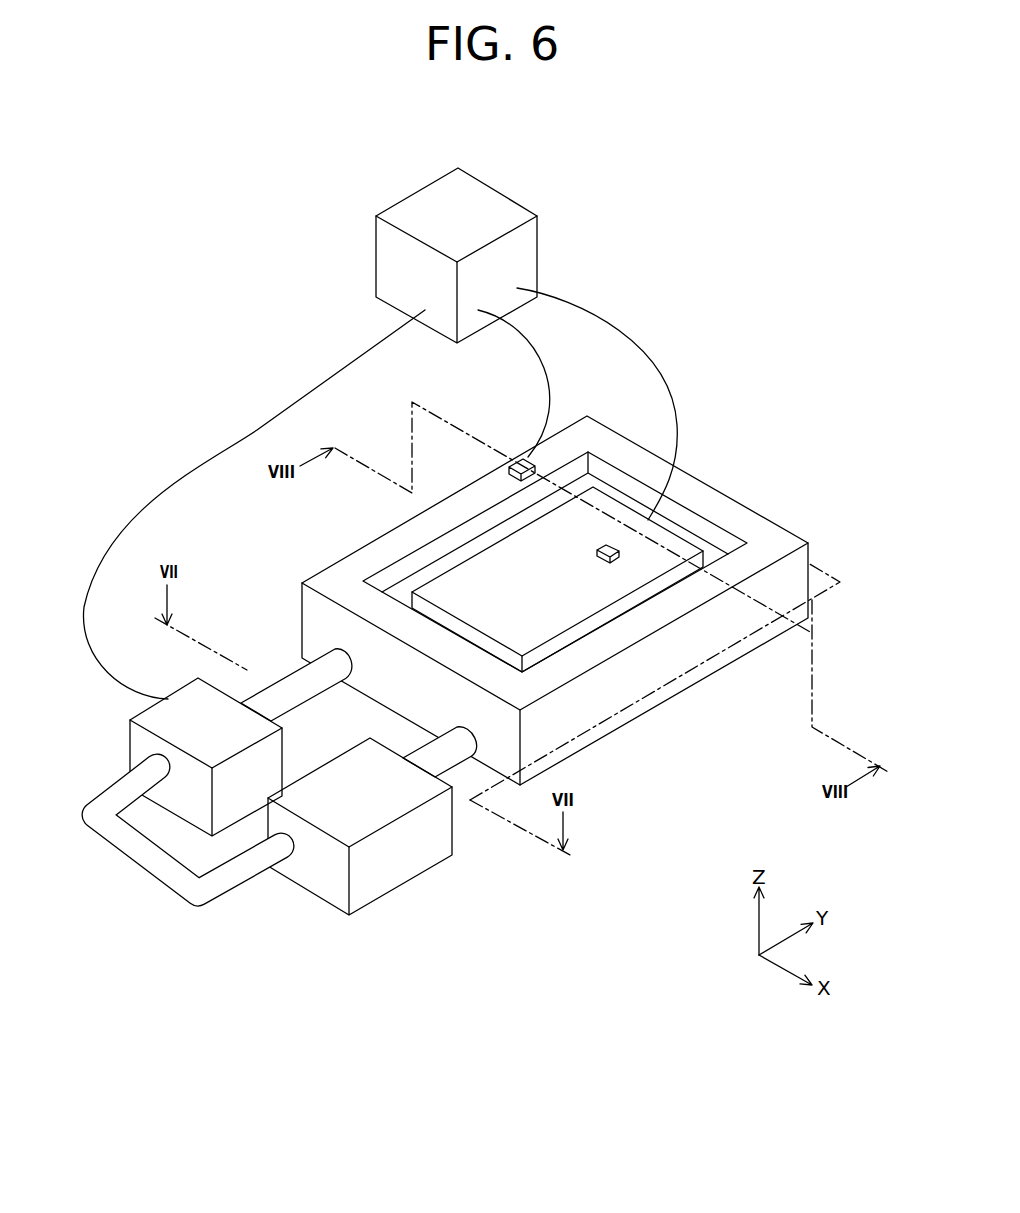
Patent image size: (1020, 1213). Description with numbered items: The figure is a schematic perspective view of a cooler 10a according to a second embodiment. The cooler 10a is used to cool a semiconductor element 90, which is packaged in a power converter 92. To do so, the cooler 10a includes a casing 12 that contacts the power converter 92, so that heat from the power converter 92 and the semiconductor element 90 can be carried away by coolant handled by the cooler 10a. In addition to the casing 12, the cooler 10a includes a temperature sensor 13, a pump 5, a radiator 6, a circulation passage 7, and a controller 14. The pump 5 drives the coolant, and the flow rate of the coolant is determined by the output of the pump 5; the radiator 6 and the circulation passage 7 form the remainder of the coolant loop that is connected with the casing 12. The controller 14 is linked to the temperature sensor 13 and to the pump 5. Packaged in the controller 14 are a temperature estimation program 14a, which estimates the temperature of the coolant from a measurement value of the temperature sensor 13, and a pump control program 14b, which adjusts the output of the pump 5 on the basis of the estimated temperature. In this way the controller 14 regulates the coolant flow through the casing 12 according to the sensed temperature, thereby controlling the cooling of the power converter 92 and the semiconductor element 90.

The controller 14 is at (498, 243).
The temperature estimation program 14a is at (456, 255).
The pump control program 14b is at (487, 203).
The cooler 10a is at (249, 331).
The temperature sensor 13 is at (507, 466).
The casing 12 is at (754, 527).
The semiconductor element 90 is at (617, 543).
The power converter 92 is at (533, 627).
The pump 5 is at (140, 710).
The radiator 6 is at (368, 888).
The circulation passage 7 is at (177, 888).